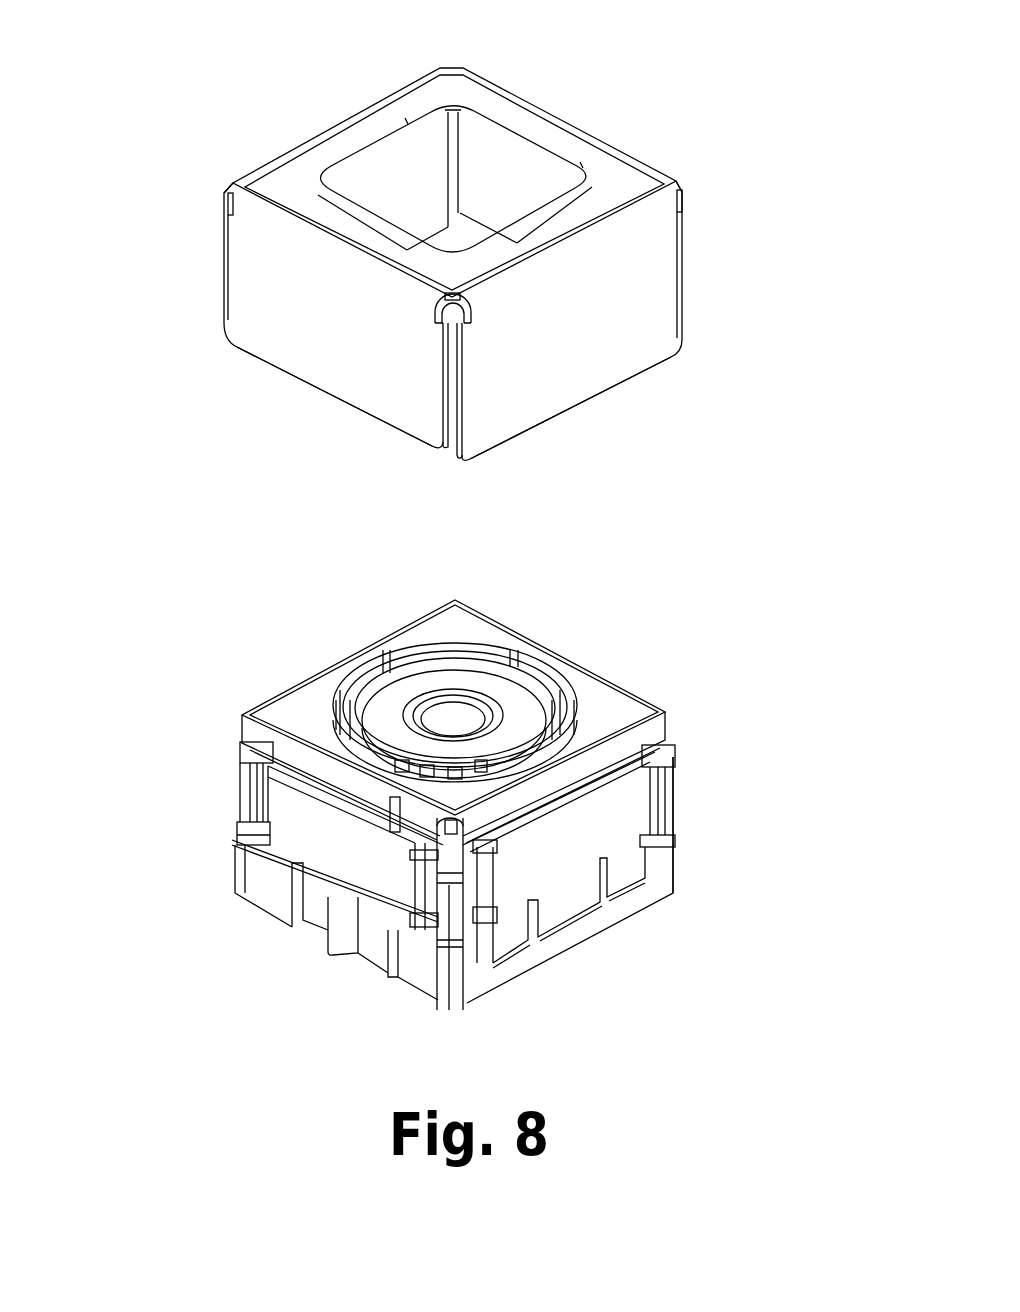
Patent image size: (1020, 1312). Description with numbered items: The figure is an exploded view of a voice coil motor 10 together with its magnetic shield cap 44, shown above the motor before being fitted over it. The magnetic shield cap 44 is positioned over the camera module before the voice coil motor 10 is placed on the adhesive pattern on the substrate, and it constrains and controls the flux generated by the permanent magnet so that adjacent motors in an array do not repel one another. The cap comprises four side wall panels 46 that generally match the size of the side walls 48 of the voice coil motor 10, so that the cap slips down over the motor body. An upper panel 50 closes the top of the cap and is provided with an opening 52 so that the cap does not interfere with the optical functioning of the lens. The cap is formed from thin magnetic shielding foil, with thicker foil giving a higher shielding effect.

The voice coil motor 10 is at (451, 880).
The magnetic shield cap 44 is at (490, 280).
The side wall panels 46 is at (243, 160).
The side walls 48 is at (665, 865).
The upper panel 50 is at (463, 97).
The opening 52 is at (488, 172).